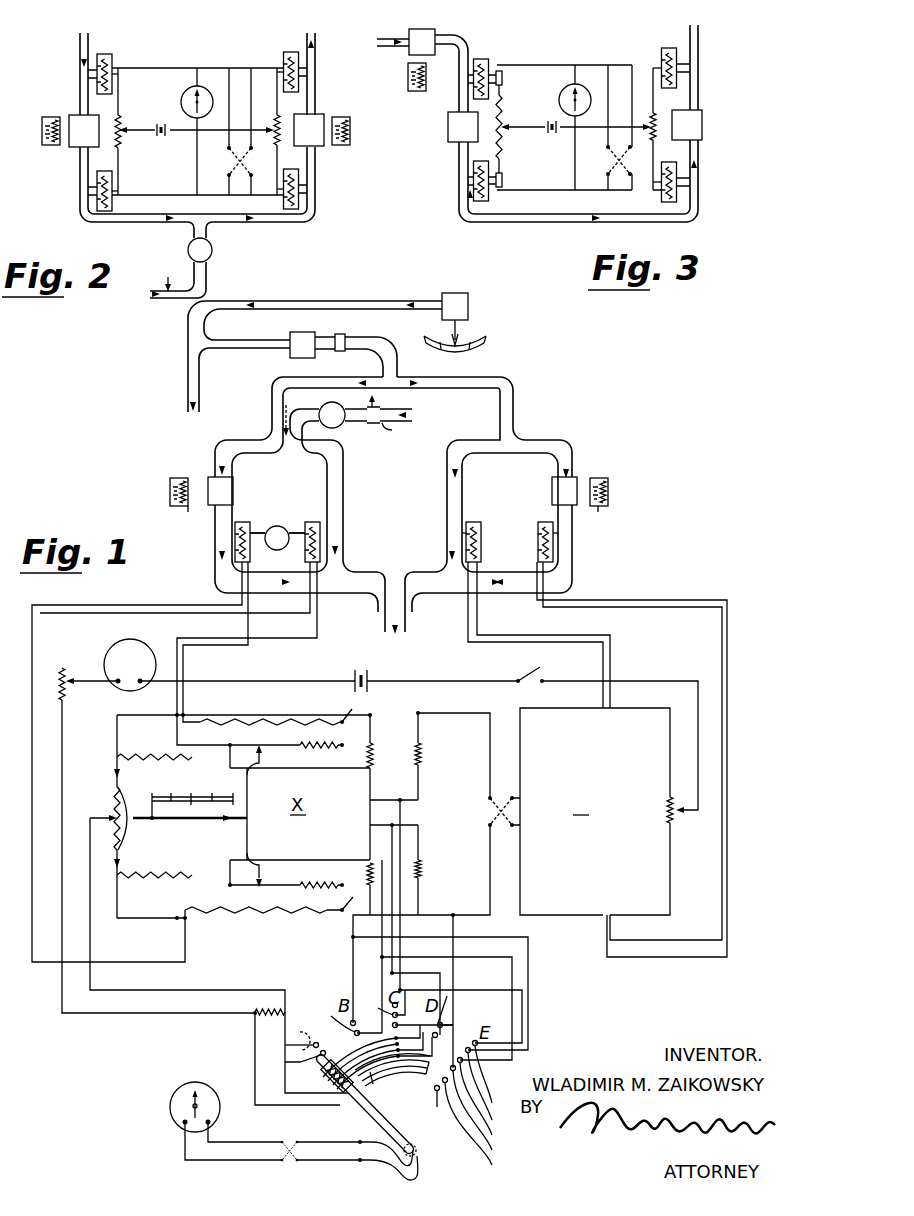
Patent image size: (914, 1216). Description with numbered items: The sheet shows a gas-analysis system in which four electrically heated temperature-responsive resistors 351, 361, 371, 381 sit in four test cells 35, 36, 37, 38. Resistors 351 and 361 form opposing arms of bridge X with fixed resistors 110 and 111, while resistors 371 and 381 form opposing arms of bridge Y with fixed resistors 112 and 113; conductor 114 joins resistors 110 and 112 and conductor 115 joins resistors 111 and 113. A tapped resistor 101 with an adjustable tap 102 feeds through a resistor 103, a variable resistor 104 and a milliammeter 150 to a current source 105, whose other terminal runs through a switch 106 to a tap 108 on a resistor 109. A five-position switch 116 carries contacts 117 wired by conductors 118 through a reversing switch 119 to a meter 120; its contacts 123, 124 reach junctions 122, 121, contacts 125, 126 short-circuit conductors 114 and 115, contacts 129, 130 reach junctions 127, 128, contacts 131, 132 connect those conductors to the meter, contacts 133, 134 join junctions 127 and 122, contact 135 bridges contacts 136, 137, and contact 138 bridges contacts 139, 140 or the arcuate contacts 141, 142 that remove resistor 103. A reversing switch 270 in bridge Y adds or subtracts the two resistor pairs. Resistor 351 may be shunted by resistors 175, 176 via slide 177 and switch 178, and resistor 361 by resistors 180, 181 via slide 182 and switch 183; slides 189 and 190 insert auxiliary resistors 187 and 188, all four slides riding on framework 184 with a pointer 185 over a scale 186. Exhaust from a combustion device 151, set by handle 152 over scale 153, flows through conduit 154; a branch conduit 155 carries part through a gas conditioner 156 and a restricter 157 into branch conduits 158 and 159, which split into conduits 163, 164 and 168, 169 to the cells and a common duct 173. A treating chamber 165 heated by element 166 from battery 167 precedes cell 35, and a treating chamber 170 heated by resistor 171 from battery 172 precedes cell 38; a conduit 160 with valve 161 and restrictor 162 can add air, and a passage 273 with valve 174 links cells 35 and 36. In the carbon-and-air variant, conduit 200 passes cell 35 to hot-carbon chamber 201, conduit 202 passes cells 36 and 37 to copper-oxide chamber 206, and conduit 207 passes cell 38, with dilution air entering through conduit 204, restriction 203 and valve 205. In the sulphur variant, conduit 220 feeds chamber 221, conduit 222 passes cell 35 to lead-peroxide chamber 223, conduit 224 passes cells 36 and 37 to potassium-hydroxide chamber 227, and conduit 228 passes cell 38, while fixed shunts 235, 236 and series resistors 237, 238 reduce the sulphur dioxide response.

In FIG. 2, the test cell 35 is at (104, 56).
In FIG. 3, the test cell 35 is at (480, 58).
In FIG. 1, the test cell 35 is at (250, 527).
In FIG. 2, the test cell 36 is at (112, 204).
In FIG. 3, the test cell 36 is at (485, 200).
In FIG. 1, the test cell 36 is at (306, 527).
In FIG. 2, the test cell 37 is at (290, 173).
In FIG. 3, the test cell 37 is at (670, 160).
In FIG. 1, the test cell 37 is at (471, 521).
In FIG. 2, the test cell 38 is at (284, 53).
In FIG. 3, the test cell 38 is at (665, 48).
In FIG. 1, the test cell 38 is at (544, 521).
In FIG. 2, the temperature-responsive resistor 351 is at (113, 77).
In FIG. 3, the temperature-responsive resistor 351 is at (491, 68).
In FIG. 1, the temperature-responsive resistor 351 is at (247, 520).
In FIG. 2, the temperature-responsive resistor 361 is at (113, 190).
In FIG. 3, the temperature-responsive resistor 361 is at (500, 190).
In FIG. 1, the temperature-responsive resistor 361 is at (312, 520).
In FIG. 2, the temperature-responsive resistor 371 is at (282, 203).
In FIG. 3, the temperature-responsive resistor 371 is at (661, 196).
In FIG. 1, the temperature-responsive resistor 371 is at (482, 536).
In FIG. 2, the temperature-responsive resistor 381 is at (283, 67).
In FIG. 3, the temperature-responsive resistor 381 is at (660, 58).
In FIG. 1, the temperature-responsive resistor 381 is at (538, 546).
In FIG. 2, the meter 120 is at (181, 103).
In FIG. 3, the meter 120 is at (560, 98).
In FIG. 1, the meter 120 is at (170, 1106).
In FIG. 2, the reversing switch 270 is at (226, 161).
In FIG. 3, the reversing switch 270 is at (603, 160).
In FIG. 1, the reversing switch 270 is at (515, 826).
In FIG. 2, the conduit 200 is at (79, 54).
In FIG. 2, the treating chamber 201 is at (72, 115).
In FIG. 2, the conduit 202 is at (100, 223).
In FIG. 2, the variable restriction 203 is at (166, 292).
In FIG. 2, the conduit 204 is at (207, 277).
In FIG. 2, the valve 205 is at (212, 250).
In FIG. 2, the treating chamber 206 is at (318, 117).
In FIG. 2, the conduit 207 is at (319, 47).
In FIG. 3, the conduit 220 is at (399, 40).
In FIG. 3, the treating chamber 221 is at (431, 35).
In FIG. 3, the conduit 222 is at (458, 103).
In FIG. 3, the treating chamber 223 is at (455, 135).
In FIG. 3, the conduit 224 is at (524, 222).
In FIG. 3, the treating chamber 227 is at (700, 118).
In FIG. 3, the conduit 228 is at (699, 34).
In FIG. 3, the fixed shunt 235 is at (503, 78).
In FIG. 3, the fixed shunt 236 is at (503, 178).
In FIG. 3, the fixed series resistor 237 is at (501, 97).
In FIG. 3, the fixed series resistor 238 is at (502, 158).
In FIG. 1, the combustion device 151 is at (451, 292).
In FIG. 1, the fuel-air ratio adjusting handle 152 is at (462, 334).
In FIG. 1, the graduated scale 153 is at (486, 341).
In FIG. 1, the conduit 154 is at (328, 300).
In FIG. 1, the branch conduit 155 is at (262, 350).
In FIG. 1, the gas conditioner 156 is at (315, 340).
In FIG. 1, the restricter 157 is at (345, 343).
In FIG. 1, the branch conduit 158 is at (336, 378).
In FIG. 1, the branch conduit 159 is at (432, 372).
In FIG. 1, the conduit 160 is at (310, 420).
In FIG. 1, the valve 161 is at (343, 424).
In FIG. 1, the adjustable restrictor 162 is at (385, 424).
In FIG. 1, the branch conduit 163 is at (233, 440).
In FIG. 1, the branch conduit 164 is at (346, 494).
In FIG. 1, the treating chamber 165 is at (212, 478).
In FIG. 1, the electrical resistance element 166 is at (190, 508).
In FIG. 1, the battery 167 is at (168, 490).
In FIG. 1, the branch conduit 168 is at (450, 477).
In FIG. 1, the branch conduit 169 is at (560, 441).
In FIG. 1, the treating chamber 170 is at (572, 465).
In FIG. 1, the resistor 171 is at (598, 504).
In FIG. 1, the battery 172 is at (610, 491).
In FIG. 1, the common duct 173 is at (456, 594).
In FIG. 1, the valve 174 is at (279, 524).
In FIG. 1, the passage 273 is at (287, 548).
In FIG. 1, the tapped resistor 101 is at (110, 790).
In FIG. 1, the adjustable tap 102 is at (108, 815).
In FIG. 1, the resistor 103 is at (254, 1011).
In FIG. 1, the variable resistor 104 is at (62, 668).
In FIG. 1, the current source 105 is at (366, 671).
In FIG. 1, the switch 106 is at (528, 670).
In FIG. 1, the tap 108 is at (674, 816).
In FIG. 1, the resistor 109 is at (668, 812).
In FIG. 1, the fixed resistor 110 is at (367, 762).
In FIG. 1, the fixed resistor 111 is at (366, 865).
In FIG. 1, the fixed resistor 112 is at (420, 760).
In FIG. 1, the fixed resistor 113 is at (420, 872).
In FIG. 1, the conductor 114 is at (400, 800).
In FIG. 1, the conductor 115 is at (418, 840).
In FIG. 1, the multiple position switch 116 is at (457, 1159).
In FIG. 1, the contacts 117 is at (291, 1037).
In FIG. 1, the conductors 118 is at (348, 1160).
In FIG. 1, the reversing switch 119 is at (285, 1163).
In FIG. 1, the junction 121 is at (371, 714).
In FIG. 1, the junction 122 is at (352, 939).
In FIG. 1, the contact 123 is at (338, 1016).
In FIG. 1, the contact 124 is at (337, 1023).
In FIG. 1, the switch contact 125 is at (330, 1083).
In FIG. 1, the switch contact 126 is at (335, 1089).
In FIG. 1, the junction 127 is at (421, 706).
In FIG. 1, the junction 128 is at (453, 914).
In FIG. 1, the switch contact 129 is at (392, 1009).
In FIG. 1, the switch contact 130 is at (390, 1020).
In FIG. 1, the contact 131 is at (448, 1008).
In FIG. 1, the contact 132 is at (446, 1021).
In FIG. 1, the contact 133 is at (499, 1080).
In FIG. 1, the contact 134 is at (496, 1092).
In FIG. 1, the contact 135 is at (288, 1060).
In FIG. 1, the contact 136 is at (492, 1104).
In FIG. 1, the contact 137 is at (489, 1116).
In FIG. 1, the contact 138 is at (342, 1098).
In FIG. 1, the contact 139 is at (484, 1129).
In FIG. 1, the contact 140 is at (437, 1092).
In FIG. 1, the arcuate contact 141 is at (410, 1088).
In FIG. 1, the arcuate contact 142 is at (388, 1074).
In FIG. 1, the milliammeter 150 is at (117, 645).
In FIG. 1, the resistor 175 is at (280, 913).
In FIG. 1, the resistor 176 is at (313, 884).
In FIG. 1, the slide 177 is at (261, 870).
In FIG. 1, the switch 178 is at (348, 906).
In FIG. 1, the resistor 180 is at (280, 727).
In FIG. 1, the resistor 181 is at (312, 743).
In FIG. 1, the adjusting slide 182 is at (261, 750).
In FIG. 1, the switch 183 is at (352, 712).
In FIG. 1, the framework 184 is at (226, 822).
In FIG. 1, the pointer 185 is at (156, 816).
In FIG. 1, the scale 186 is at (165, 795).
In FIG. 1, the auxiliary resistor 187 is at (135, 756).
In FIG. 1, the auxiliary resistor 188 is at (158, 877).
In FIG. 1, the slide 189 is at (112, 772).
In FIG. 1, the slide 190 is at (120, 867).